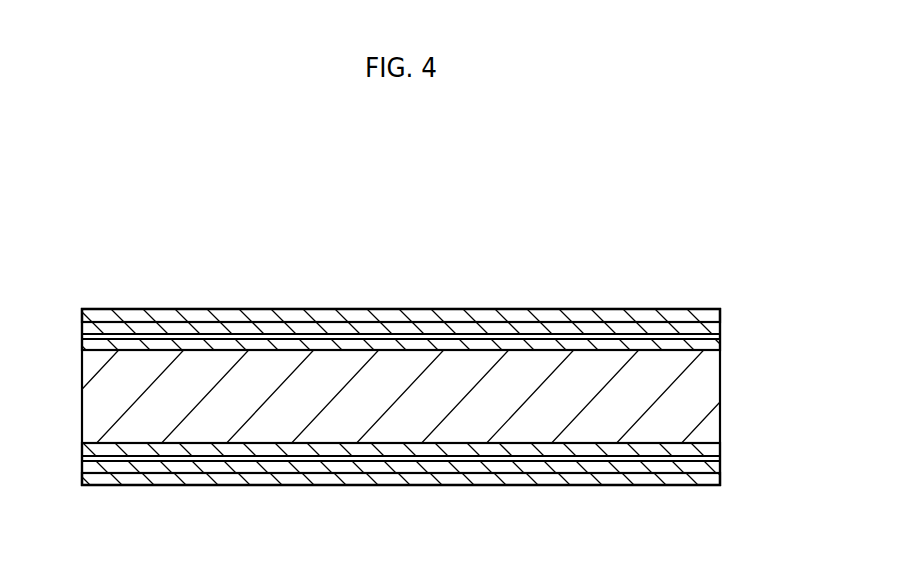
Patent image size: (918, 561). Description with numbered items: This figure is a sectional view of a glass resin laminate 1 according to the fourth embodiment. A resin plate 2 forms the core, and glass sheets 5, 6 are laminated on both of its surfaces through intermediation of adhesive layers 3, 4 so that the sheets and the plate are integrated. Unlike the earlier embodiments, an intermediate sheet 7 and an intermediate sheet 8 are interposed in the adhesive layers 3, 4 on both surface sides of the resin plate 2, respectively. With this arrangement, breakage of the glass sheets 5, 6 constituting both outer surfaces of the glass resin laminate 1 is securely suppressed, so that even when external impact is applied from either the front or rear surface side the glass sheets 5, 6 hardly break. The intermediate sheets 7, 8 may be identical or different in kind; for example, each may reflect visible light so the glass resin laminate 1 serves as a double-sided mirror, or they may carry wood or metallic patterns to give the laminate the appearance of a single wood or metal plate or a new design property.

The glass resin laminate 1 is at (345, 232).
The resin plate 2 is at (695, 397).
The adhesive layer 3 is at (419, 319).
The adhesive layer 4 is at (420, 478).
The glass sheet 5 is at (640, 314).
The glass sheet 6 is at (617, 480).
The intermediate sheet 7 is at (108, 345).
The intermediate sheet 8 is at (110, 447).